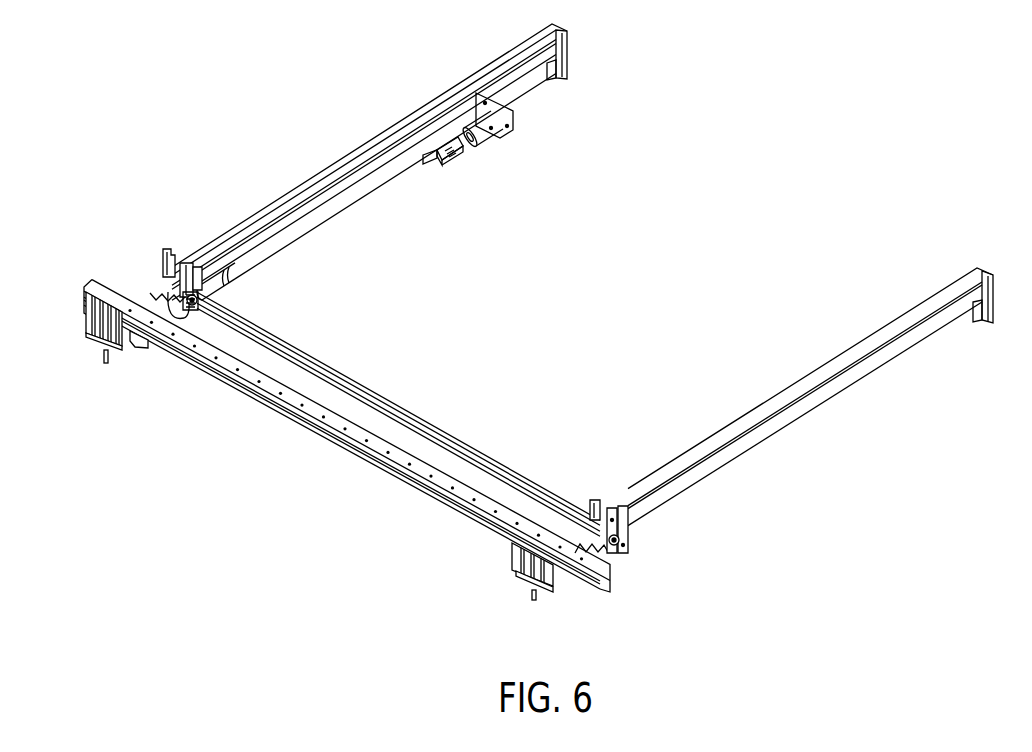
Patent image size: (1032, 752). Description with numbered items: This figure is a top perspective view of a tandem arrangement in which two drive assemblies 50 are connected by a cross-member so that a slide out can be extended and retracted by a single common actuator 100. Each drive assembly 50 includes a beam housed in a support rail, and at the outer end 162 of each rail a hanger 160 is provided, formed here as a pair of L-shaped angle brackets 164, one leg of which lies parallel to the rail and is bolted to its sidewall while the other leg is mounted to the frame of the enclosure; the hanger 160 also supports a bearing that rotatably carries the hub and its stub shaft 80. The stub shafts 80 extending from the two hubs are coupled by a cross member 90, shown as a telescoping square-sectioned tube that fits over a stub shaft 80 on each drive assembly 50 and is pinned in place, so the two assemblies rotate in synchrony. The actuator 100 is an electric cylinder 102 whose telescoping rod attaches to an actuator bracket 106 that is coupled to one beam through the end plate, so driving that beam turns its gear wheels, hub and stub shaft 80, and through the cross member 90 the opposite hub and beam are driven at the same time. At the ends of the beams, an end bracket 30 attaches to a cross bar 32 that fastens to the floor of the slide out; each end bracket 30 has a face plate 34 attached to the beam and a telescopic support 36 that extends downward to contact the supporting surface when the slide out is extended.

The end bracket 30 is at (83, 305).
The cross bar 32 is at (287, 413).
The face plate 34 is at (93, 331).
The support 36 is at (106, 364).
The drive assembly 50 is at (251, 185).
The stub shaft 80 is at (196, 308).
The cross member 90 is at (354, 396).
The actuator 100 is at (290, 243).
The electric cylinder 102 is at (395, 172).
The actuator bracket 106 is at (132, 342).
The hanger 160 is at (160, 271).
The outer end 162 is at (183, 265).
The L-shaped angle bracket 164 is at (167, 258).